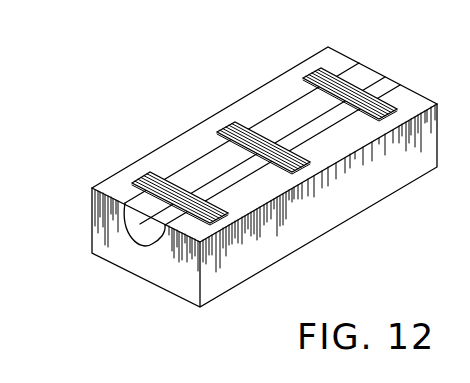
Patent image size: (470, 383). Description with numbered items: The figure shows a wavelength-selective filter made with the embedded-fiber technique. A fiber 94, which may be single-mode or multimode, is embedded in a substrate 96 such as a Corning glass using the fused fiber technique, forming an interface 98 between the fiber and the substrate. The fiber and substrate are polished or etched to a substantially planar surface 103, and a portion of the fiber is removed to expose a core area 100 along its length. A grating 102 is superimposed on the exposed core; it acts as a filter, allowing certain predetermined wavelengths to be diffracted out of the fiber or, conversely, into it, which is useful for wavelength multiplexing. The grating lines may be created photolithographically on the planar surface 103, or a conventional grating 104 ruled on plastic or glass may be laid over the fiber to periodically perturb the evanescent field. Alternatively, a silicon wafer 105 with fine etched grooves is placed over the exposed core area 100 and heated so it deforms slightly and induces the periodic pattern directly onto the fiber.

The fiber 94 is at (138, 214).
The substrate 96 is at (174, 273).
The interface 98 is at (143, 236).
The core area 100 is at (284, 130).
The grating 102 is at (222, 130).
The planar surface 103 is at (213, 162).
The conventional grating 104 is at (322, 72).
The wafer 105 is at (148, 173).